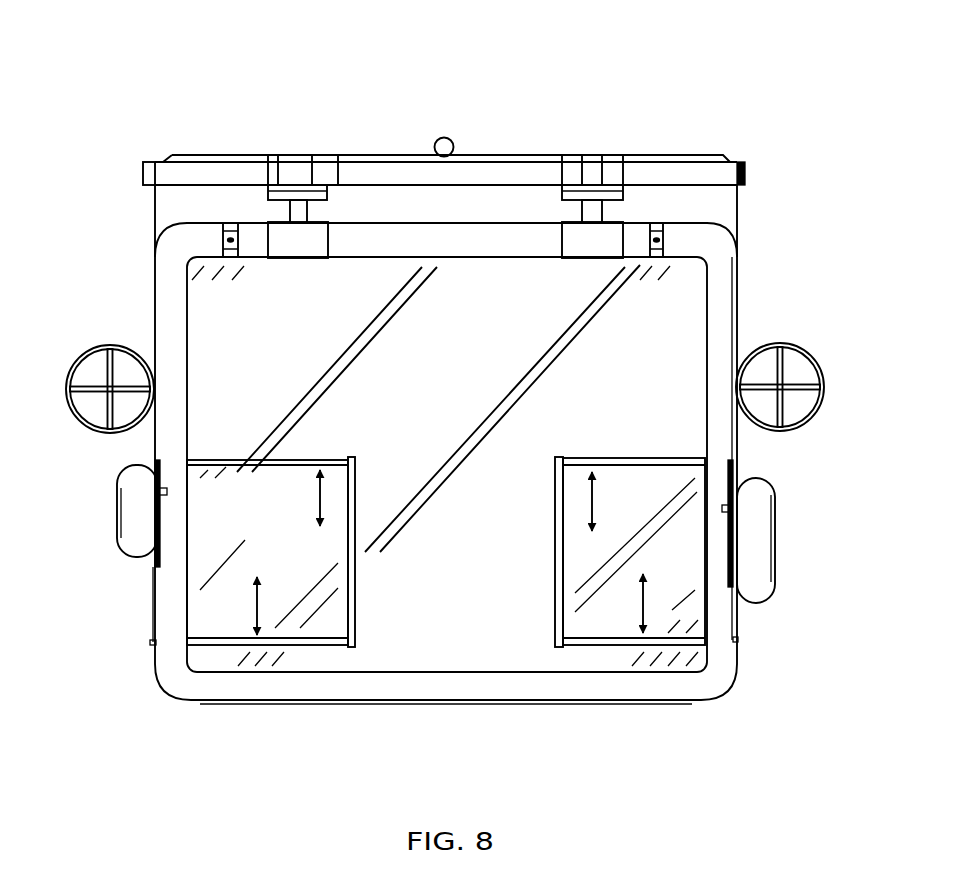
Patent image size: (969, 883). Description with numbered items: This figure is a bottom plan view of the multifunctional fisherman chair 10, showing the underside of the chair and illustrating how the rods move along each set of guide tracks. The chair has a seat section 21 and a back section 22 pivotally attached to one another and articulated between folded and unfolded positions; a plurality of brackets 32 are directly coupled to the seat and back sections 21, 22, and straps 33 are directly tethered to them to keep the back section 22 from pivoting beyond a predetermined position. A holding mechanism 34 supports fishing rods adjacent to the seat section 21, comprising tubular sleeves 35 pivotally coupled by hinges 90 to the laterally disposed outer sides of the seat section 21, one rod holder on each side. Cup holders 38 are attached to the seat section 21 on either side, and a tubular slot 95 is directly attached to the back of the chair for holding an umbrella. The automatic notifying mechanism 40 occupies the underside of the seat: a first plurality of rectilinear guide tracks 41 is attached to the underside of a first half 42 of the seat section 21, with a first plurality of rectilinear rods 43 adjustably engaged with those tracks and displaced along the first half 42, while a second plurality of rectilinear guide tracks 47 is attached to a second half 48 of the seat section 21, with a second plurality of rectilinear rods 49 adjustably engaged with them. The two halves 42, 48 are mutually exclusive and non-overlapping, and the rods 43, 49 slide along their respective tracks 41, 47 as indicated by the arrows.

The multifunctional fisherman chair 10 is at (150, 133).
The seat section 21 is at (605, 658).
The back section 22 is at (475, 167).
The brackets 32 is at (298, 213).
The straps 33 is at (155, 227).
The holding mechanism 34 is at (533, 580).
The tubular sleeves 35 is at (133, 535).
The cup holders 38 is at (68, 388).
The automatic notifying mechanism 40 is at (160, 698).
The first plurality of rectilinear guide tracks 41 is at (190, 597).
The first half of the seat section 42 is at (283, 362).
The first plurality of rectilinear rods 43 is at (275, 458).
The second plurality of rectilinear guide tracks 47 is at (703, 592).
The second half of the seat section 48 is at (650, 383).
The second plurality of rectilinear rods 49 is at (623, 458).
The hinges 90 is at (163, 490).
The tubular slot 95 is at (439, 139).